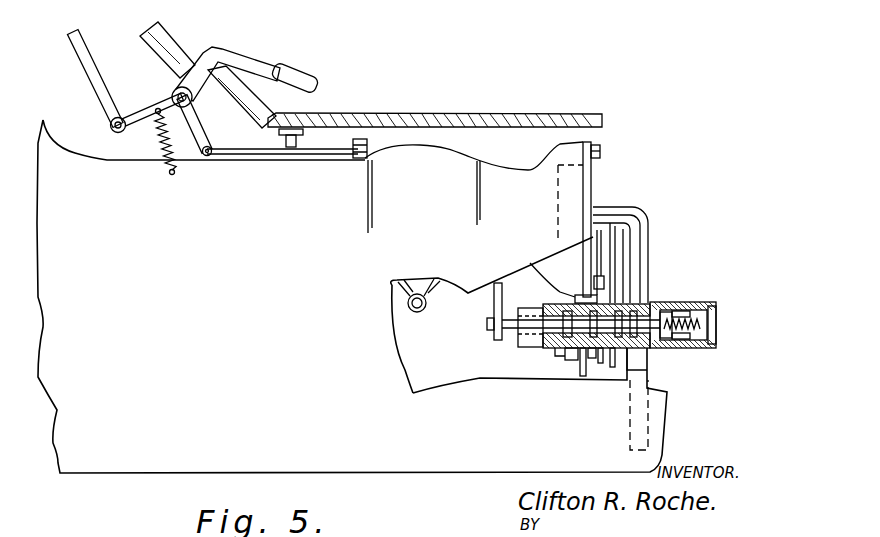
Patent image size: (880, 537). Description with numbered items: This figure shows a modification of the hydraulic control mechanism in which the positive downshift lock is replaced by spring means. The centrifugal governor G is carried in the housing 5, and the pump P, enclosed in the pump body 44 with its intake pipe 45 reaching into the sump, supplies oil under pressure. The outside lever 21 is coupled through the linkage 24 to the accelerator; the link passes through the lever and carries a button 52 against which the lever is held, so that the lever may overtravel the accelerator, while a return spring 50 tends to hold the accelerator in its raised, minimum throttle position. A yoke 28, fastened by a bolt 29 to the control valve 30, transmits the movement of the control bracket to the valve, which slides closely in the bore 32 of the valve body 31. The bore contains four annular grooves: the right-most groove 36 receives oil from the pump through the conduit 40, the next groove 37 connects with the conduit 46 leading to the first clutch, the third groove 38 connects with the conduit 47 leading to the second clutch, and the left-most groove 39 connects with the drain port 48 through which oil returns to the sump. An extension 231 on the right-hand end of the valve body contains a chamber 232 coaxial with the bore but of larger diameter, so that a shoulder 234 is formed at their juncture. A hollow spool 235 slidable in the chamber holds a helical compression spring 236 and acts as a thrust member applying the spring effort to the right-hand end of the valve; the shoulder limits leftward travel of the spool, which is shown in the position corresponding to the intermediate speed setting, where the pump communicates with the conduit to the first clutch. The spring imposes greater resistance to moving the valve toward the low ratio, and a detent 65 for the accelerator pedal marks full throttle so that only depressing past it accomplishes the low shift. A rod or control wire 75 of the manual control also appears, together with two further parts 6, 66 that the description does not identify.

The housing 5 is at (462, 156).
The floor board 6 is at (108, 447).
The outside lever 21 is at (355, 128).
The linkage 24 is at (276, 157).
The yoke 28 is at (493, 298).
The bolt 29 is at (487, 324).
The control valve 30 is at (565, 294).
The valve body 31 is at (646, 303).
The bore 32 is at (630, 364).
The annular groove 36 is at (613, 367).
The annular groove 37 is at (600, 364).
The annular groove 38 is at (575, 358).
The annular groove 39 is at (565, 352).
The conduit 40 is at (618, 232).
The pump body 44 is at (575, 140).
The intake pipe 45 is at (628, 207).
The conduit 46 is at (597, 365).
The conduit 47 is at (583, 376).
The drain port 48 is at (560, 345).
The return spring 50 is at (157, 118).
The button 52 is at (367, 150).
The detent 65 is at (283, 136).
The clutch pedal lever 66 is at (88, 62).
The rod or control wire 75 is at (222, 58).
The extension 231 is at (700, 302).
The chamber 232 is at (680, 342).
The shoulder 234 is at (664, 310).
The hollow spool 235 is at (683, 310).
The helical compression spring 236 is at (717, 314).
The centrifugal governor G is at (421, 290).
The pump P is at (576, 180).